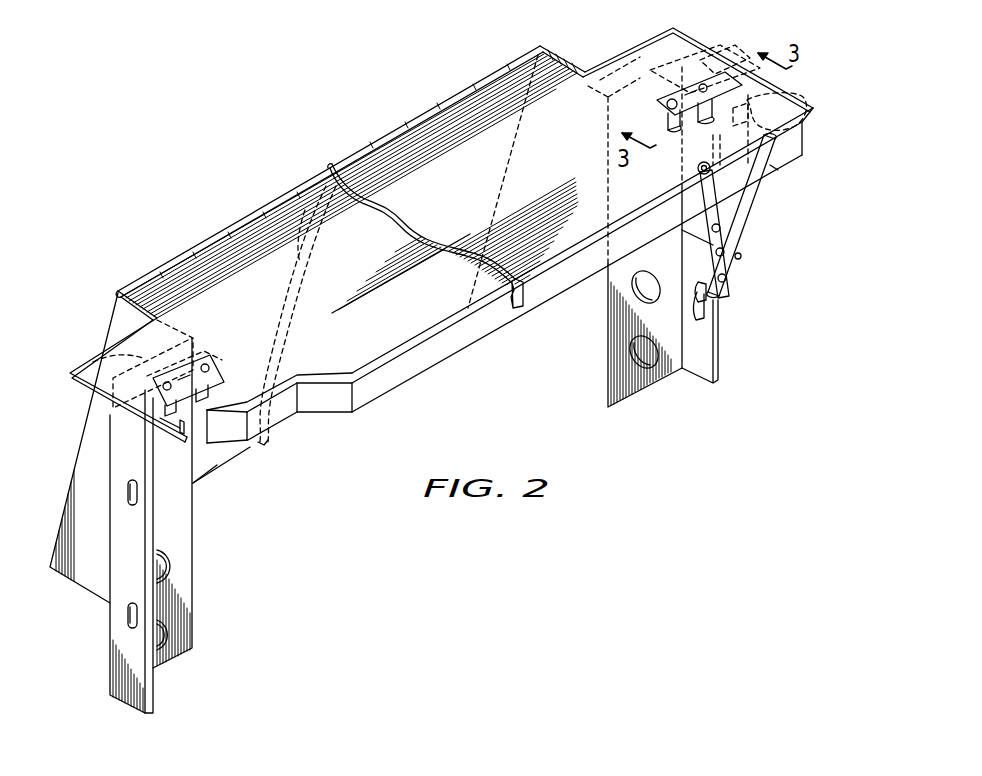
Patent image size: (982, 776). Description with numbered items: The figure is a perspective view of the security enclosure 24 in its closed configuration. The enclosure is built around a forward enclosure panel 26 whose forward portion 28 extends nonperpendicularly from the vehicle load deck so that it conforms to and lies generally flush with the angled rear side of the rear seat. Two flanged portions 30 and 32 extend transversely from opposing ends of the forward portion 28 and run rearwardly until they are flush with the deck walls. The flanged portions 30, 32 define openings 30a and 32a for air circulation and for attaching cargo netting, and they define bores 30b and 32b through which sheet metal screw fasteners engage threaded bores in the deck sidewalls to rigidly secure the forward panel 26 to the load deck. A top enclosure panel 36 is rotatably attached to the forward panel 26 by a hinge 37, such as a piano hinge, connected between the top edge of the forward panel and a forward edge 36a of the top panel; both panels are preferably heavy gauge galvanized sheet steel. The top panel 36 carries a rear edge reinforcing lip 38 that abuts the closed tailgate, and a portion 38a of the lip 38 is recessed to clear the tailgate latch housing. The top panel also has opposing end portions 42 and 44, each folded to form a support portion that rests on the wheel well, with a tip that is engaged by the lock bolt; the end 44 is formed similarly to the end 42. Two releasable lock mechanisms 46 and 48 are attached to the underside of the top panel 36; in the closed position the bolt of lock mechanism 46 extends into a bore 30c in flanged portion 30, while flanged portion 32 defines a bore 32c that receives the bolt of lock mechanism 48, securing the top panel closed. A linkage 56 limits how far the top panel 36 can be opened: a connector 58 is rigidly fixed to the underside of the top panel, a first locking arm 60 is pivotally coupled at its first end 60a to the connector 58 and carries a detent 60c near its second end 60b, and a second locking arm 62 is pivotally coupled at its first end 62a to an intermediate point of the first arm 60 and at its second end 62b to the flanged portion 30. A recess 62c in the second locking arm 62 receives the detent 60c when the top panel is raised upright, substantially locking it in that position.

The security enclosure 24 is at (566, 47).
The forward enclosure panel 26 is at (150, 371).
The forward portion 28 is at (217, 465).
The flanged portion 30 is at (662, 224).
The opening 30a is at (626, 290).
The bore 30b is at (713, 340).
The bore 30c is at (727, 85).
The flanged portion 32 is at (137, 503).
The opening 32a is at (107, 358).
The bore 32b is at (128, 492).
The bore 32c is at (166, 424).
The top enclosure panel 36 is at (363, 353).
The forward edge 36a is at (345, 160).
The hinge 37 is at (423, 112).
The rear edge reinforcing lip 38 is at (452, 347).
The recessed portion of lip 38a is at (341, 414).
The end portion 42 is at (815, 126).
The end portion 44 is at (81, 390).
The releasable lock mechanism 46 is at (690, 73).
The releasable lock mechanism 48 is at (215, 357).
The linkage 56 is at (733, 219).
The connector 58 is at (790, 96).
The first locking arm 60 is at (759, 219).
The first end 60a is at (777, 170).
The second end 60b is at (700, 318).
The detent 60c is at (718, 290).
The second locking arm 62 is at (720, 216).
The first end 62a is at (728, 280).
The second end 62b is at (696, 170).
The recess 62c is at (742, 256).